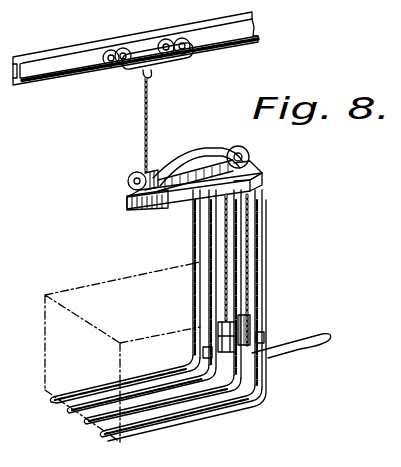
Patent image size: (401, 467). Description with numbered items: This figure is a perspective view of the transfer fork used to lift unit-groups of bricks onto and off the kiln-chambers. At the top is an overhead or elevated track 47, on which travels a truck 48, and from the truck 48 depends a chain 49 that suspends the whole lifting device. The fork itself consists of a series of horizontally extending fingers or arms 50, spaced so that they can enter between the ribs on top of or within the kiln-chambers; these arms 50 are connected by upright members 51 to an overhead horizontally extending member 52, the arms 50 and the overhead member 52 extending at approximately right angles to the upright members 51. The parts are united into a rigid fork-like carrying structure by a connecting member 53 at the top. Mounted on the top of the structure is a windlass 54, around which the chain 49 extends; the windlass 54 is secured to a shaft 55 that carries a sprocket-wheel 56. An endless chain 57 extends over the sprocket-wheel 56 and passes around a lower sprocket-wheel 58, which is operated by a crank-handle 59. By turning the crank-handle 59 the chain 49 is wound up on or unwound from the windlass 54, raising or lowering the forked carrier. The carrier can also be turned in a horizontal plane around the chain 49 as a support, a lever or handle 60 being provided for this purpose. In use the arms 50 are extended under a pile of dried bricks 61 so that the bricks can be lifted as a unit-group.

The overhead track 47 is at (69, 53).
The truck 48 is at (146, 55).
The chain 49 is at (149, 107).
The horizontally extending fingers 50 is at (102, 434).
The upright members 51 is at (228, 284).
The overhead horizontally extending member 52 is at (193, 196).
The connecting member 53 is at (144, 211).
The windlass 54 is at (136, 179).
The shaft 55 is at (197, 167).
The sprocket-wheel 56 is at (257, 156).
The endless chain 57 is at (248, 252).
The lower sprocket-wheel 58 is at (250, 334).
The crank-handle 59 is at (252, 316).
The lever 60 is at (302, 348).
The pile of dried bricks 61 is at (122, 352).